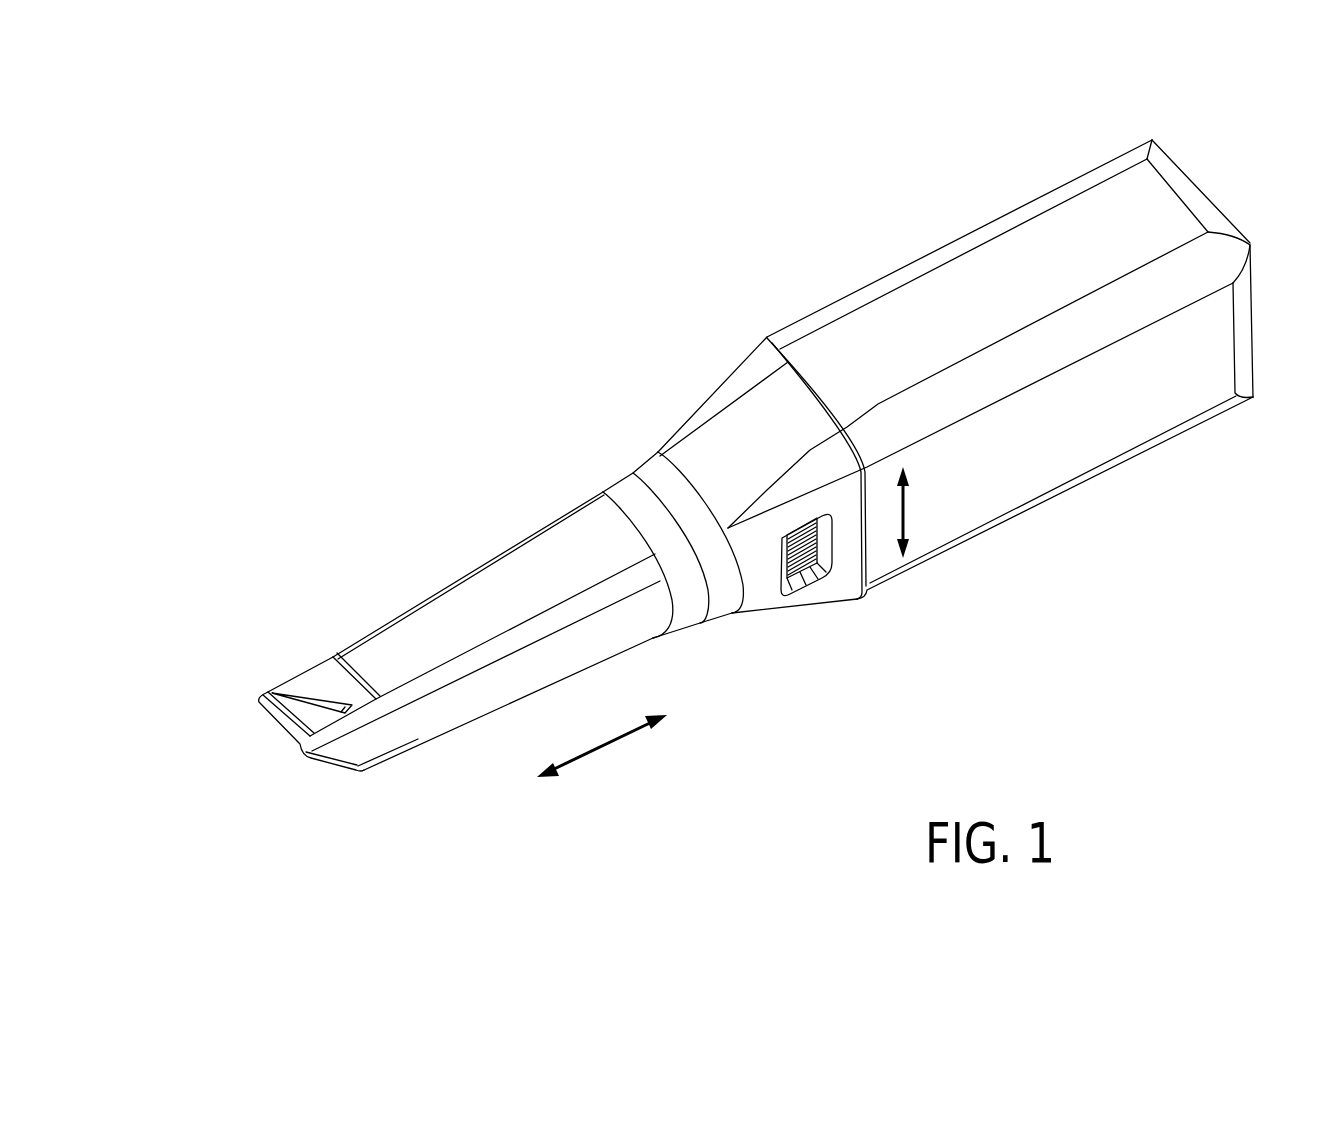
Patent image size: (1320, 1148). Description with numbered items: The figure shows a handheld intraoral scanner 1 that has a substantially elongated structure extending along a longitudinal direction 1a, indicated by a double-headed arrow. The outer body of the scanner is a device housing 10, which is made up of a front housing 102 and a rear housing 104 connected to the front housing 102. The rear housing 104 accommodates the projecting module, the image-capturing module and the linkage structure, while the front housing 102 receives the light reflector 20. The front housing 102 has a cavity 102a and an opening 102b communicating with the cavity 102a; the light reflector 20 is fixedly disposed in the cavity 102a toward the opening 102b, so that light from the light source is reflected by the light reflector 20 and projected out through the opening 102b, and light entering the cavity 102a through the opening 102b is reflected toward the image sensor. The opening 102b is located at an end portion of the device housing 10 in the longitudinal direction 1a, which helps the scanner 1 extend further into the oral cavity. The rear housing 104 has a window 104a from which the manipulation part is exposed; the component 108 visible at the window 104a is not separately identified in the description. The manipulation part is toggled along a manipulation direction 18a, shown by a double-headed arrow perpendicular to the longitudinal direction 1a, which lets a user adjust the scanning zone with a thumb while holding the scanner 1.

The intraoral scanner 1 is at (700, 477).
The longitudinal direction 1a is at (602, 750).
The device housing 10 is at (700, 477).
The front housing 102 is at (403, 614).
The cavity 102a is at (280, 732).
The opening 102b is at (325, 670).
The rear housing 104 is at (770, 393).
The window 104a is at (827, 545).
The switch 108 is at (803, 558).
The manipulation direction 18a is at (927, 512).
The light reflector 20 is at (305, 710).